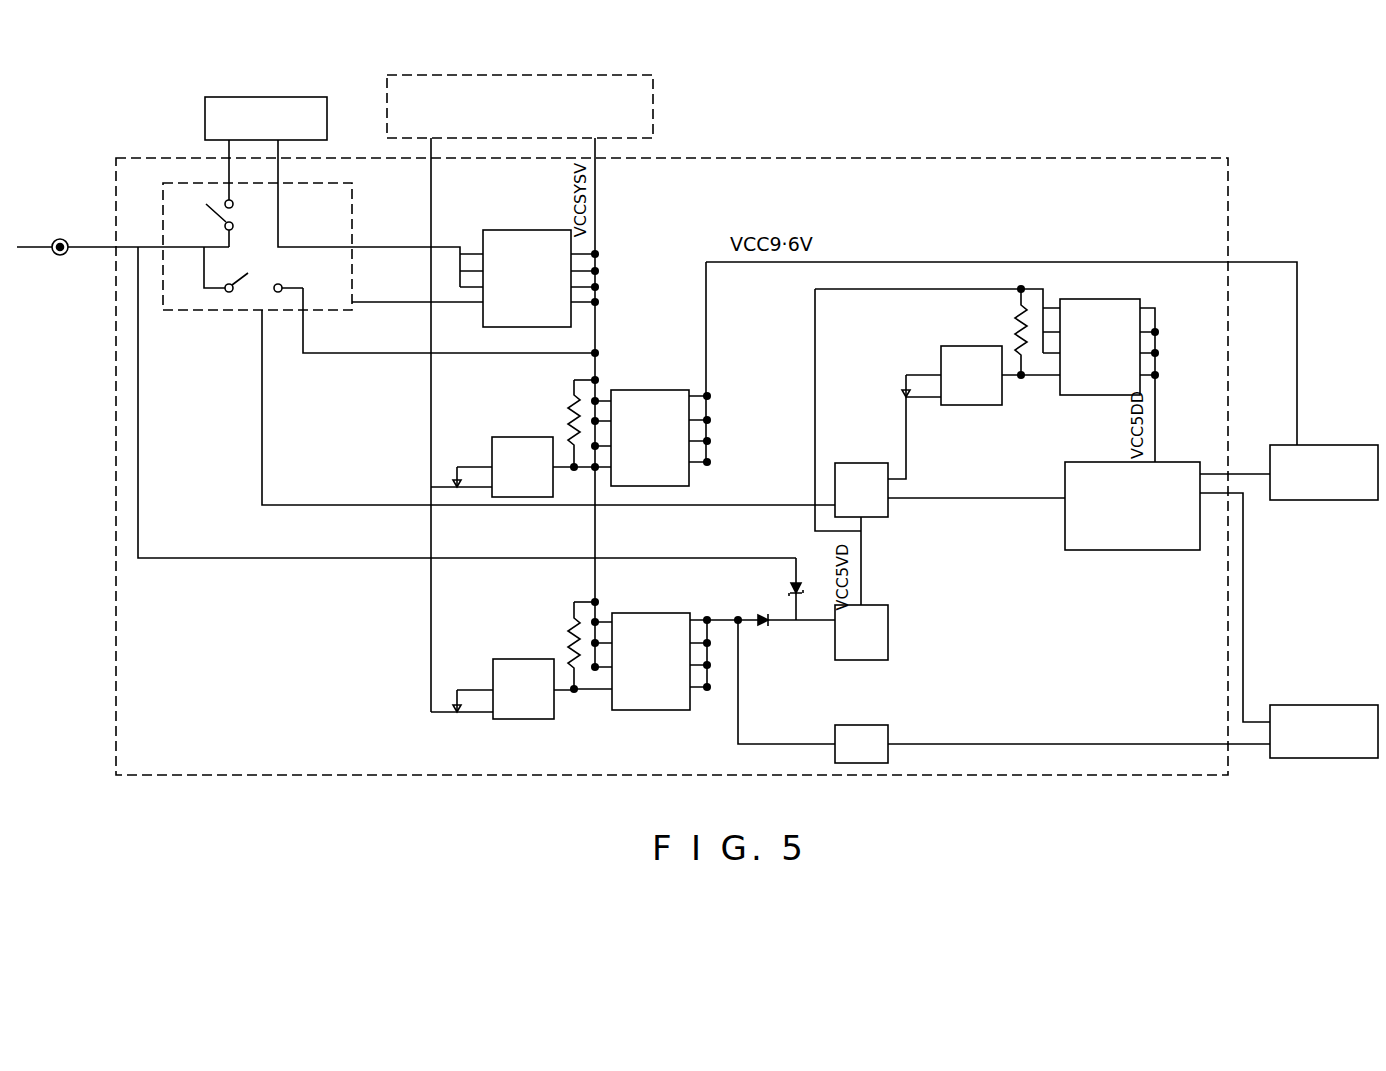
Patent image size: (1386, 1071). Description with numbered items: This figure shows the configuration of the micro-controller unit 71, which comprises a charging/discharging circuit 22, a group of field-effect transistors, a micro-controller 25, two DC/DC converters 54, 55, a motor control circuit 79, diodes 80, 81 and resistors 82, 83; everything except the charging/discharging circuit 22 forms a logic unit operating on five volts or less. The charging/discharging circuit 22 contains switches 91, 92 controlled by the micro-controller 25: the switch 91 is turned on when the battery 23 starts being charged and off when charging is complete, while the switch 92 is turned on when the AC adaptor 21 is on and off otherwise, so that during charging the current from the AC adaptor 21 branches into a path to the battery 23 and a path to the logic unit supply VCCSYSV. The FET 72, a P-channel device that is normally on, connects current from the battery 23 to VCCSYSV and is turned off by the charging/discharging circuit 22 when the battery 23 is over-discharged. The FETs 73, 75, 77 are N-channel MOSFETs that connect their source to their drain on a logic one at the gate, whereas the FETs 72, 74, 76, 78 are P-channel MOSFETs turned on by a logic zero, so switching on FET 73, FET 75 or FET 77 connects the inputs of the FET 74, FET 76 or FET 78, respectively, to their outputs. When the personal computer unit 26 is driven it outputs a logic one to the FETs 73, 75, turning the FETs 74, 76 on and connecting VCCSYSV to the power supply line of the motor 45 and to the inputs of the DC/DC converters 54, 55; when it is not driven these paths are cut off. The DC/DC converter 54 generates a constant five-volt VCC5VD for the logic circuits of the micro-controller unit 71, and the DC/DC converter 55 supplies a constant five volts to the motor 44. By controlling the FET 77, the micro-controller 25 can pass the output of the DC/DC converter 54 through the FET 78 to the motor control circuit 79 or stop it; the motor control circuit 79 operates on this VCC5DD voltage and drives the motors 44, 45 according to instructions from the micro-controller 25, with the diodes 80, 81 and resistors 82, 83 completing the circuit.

The AC adaptor 21 is at (61, 239).
The charging/discharging circuit 22 is at (352, 233).
The battery 23 is at (205, 118).
The micro-controller 25 is at (862, 463).
The personal computer unit 26 is at (653, 108).
The motor 44 is at (1318, 705).
The motor 45 is at (1297, 428).
The DC/DC converter 54 is at (890, 632).
The DC/DC converter 55 is at (862, 725).
The micro-controller unit 71 is at (114, 467).
The FET 72 is at (526, 230).
The FET 73 is at (520, 437).
The FET 74 is at (650, 390).
The FET 75 is at (524, 659).
The FET 76 is at (654, 613).
The FET 77 is at (970, 346).
The FET 78 is at (1100, 299).
The motor control circuit 79 is at (1063, 468).
The diode 80 is at (800, 590).
The diode 81 is at (766, 616).
The resistor 82 is at (576, 412).
The resistor 83 is at (578, 630).
The switch 91 is at (220, 212).
The switch 92 is at (244, 282).